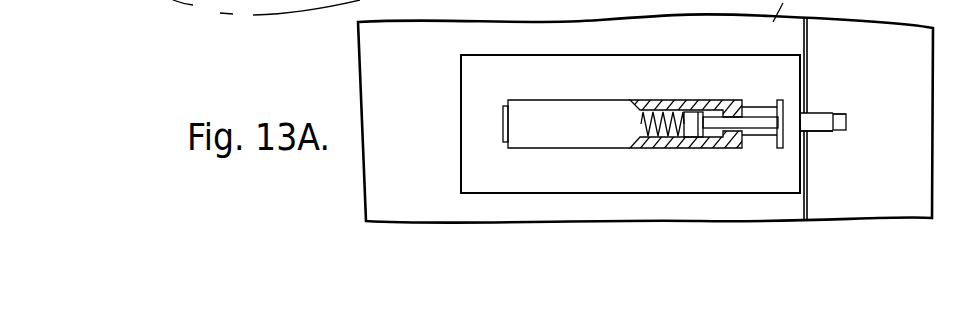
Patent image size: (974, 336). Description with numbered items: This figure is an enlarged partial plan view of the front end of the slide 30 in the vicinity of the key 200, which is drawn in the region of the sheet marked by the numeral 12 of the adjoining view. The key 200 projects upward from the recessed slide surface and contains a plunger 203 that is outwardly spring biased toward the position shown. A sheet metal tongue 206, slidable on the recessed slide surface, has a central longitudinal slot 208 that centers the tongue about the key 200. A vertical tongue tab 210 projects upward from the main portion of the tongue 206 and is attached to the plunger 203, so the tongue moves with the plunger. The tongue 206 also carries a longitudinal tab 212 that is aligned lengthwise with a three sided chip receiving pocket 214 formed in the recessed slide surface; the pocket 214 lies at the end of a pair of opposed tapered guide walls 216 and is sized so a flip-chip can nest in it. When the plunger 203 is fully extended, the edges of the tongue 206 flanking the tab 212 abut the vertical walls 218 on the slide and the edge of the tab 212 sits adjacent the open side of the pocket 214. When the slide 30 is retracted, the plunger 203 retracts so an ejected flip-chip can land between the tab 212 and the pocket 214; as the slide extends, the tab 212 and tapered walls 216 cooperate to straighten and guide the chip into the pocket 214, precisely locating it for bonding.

The adjacent structure 12 is at (115, 3).
The slide 30 is at (424, 139).
The key 200 is at (527, 137).
The plunger 203 is at (757, 118).
The sheet metal tongue 206 is at (483, 84).
The central longitudinal slot 208 is at (760, 138).
The vertical tongue tab 210 is at (783, 110).
The longitudinal tab 212 is at (823, 129).
The chip receiving pocket 214 is at (845, 120).
The tapered guide walls 216 is at (810, 133).
The vertical walls 218 is at (806, 36).